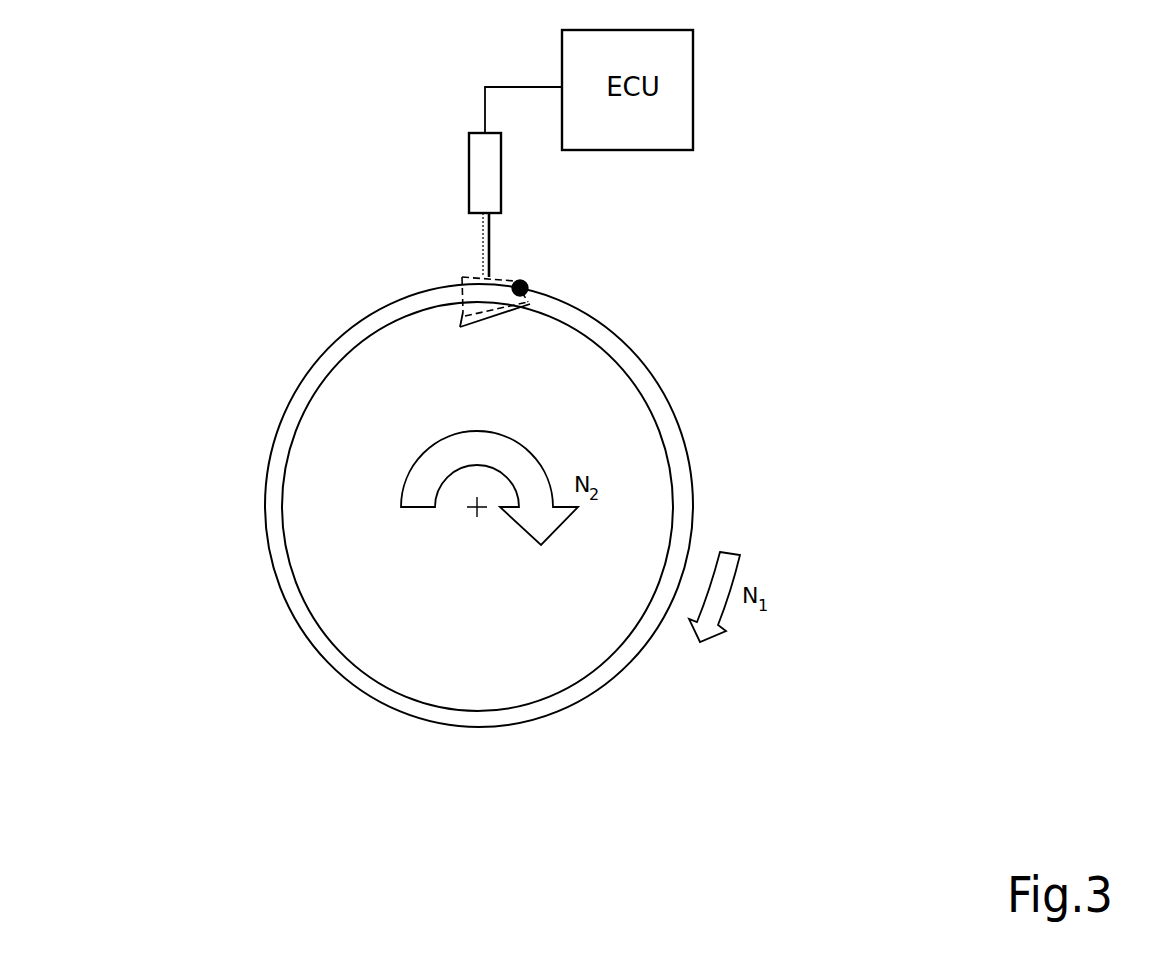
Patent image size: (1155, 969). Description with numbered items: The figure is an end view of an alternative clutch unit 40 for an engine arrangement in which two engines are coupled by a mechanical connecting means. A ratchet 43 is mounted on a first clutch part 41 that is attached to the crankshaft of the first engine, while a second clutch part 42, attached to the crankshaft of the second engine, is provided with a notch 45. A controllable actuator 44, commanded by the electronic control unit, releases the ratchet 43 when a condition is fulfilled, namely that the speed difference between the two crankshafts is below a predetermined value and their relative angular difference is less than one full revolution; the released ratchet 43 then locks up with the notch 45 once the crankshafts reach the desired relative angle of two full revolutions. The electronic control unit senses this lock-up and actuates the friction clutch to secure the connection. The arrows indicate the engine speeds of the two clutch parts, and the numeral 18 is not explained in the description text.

The rotating component (shaft assembly) 18 is at (682, 337).
The clutch unit 40 is at (533, 263).
The first clutch part 41 is at (683, 427).
The second clutch part 42 is at (340, 412).
The ratchet 43 is at (462, 308).
The controllable actuator 44 is at (480, 182).
The notch 45 is at (528, 305).